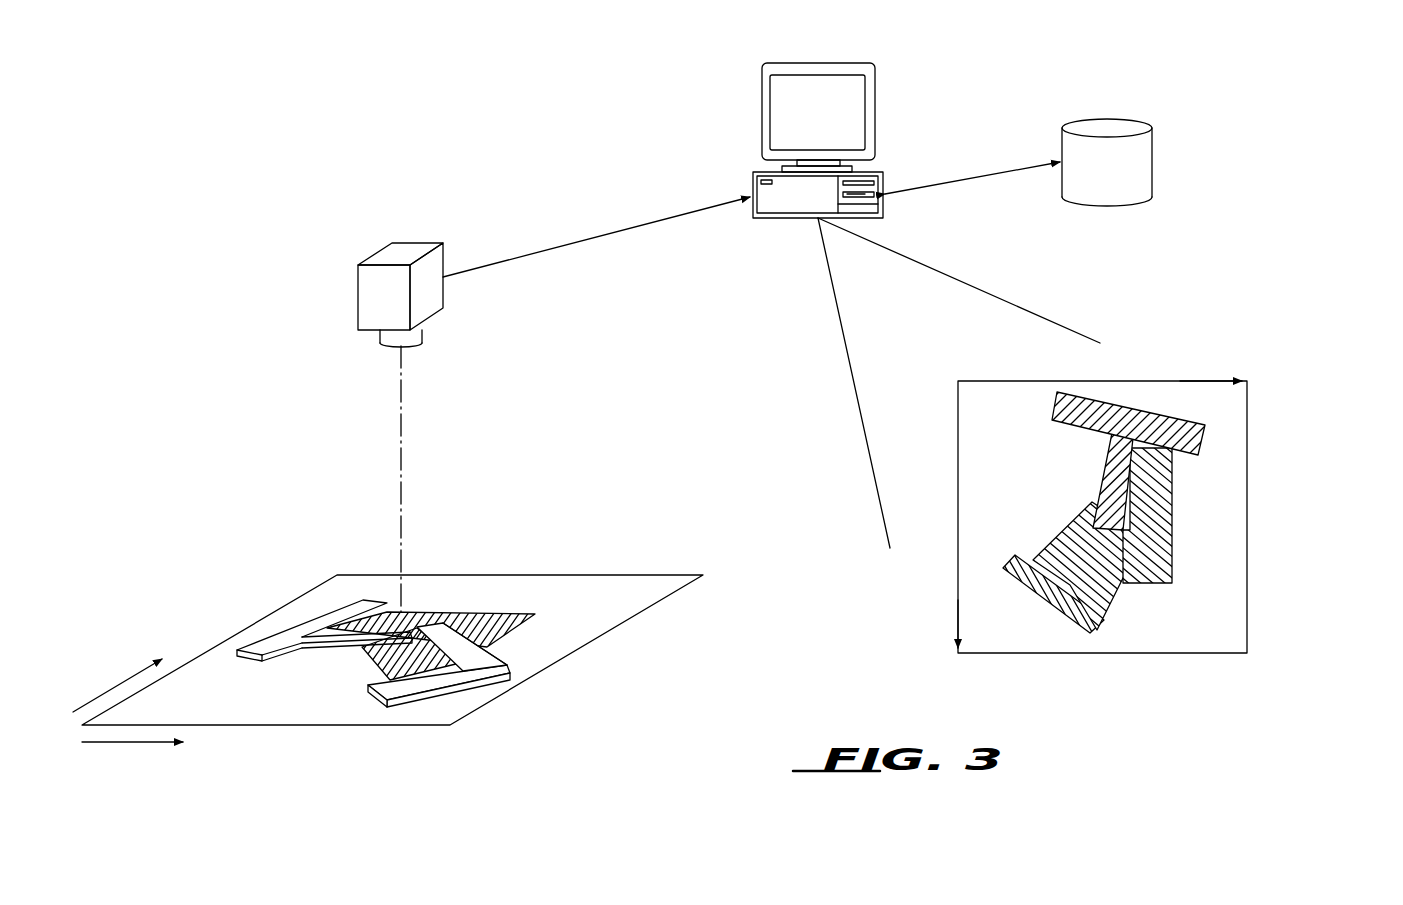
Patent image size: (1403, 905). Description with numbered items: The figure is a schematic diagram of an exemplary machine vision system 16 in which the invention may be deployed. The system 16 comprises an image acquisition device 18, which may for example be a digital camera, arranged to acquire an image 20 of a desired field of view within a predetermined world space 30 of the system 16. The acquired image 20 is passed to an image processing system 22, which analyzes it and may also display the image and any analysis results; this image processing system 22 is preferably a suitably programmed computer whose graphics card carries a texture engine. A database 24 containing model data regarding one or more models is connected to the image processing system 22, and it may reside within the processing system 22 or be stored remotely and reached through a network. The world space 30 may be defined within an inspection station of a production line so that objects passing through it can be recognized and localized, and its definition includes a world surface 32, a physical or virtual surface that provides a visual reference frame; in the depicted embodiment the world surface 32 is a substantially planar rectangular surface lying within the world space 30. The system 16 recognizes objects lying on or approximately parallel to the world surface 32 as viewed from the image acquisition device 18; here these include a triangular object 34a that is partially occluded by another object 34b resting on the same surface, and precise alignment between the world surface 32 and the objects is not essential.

The machine vision system 16 is at (590, 67).
The image acquisition device 18 is at (357, 297).
The image 20 is at (1277, 428).
The image processing system 22 is at (762, 108).
The database 24 is at (1152, 162).
The world space 30 is at (238, 483).
The world surface 32 is at (632, 588).
The triangular object 34a is at (480, 612).
The other object 34b is at (302, 636).